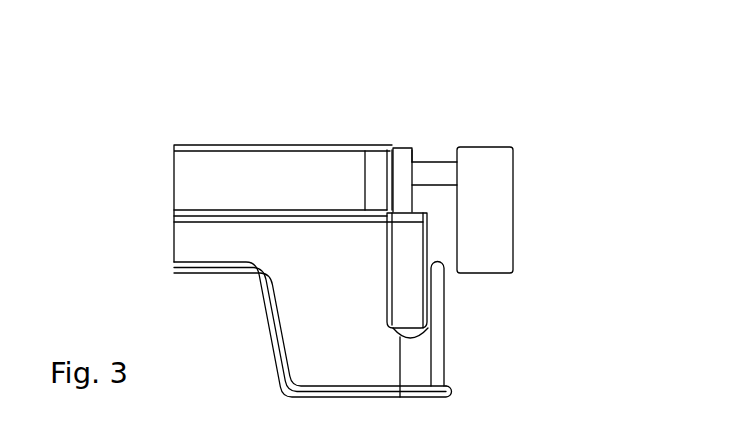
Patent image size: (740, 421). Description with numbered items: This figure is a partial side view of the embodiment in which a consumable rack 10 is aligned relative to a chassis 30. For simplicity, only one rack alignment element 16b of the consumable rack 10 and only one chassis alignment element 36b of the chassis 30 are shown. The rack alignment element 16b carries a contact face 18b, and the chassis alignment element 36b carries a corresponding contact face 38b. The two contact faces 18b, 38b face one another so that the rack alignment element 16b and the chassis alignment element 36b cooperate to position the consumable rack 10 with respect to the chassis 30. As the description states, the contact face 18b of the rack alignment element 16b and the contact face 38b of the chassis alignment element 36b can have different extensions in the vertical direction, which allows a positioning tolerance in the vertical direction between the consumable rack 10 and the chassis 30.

The consumable rack 10 is at (446, 343).
The rack alignment element 16b is at (398, 148).
The contact face 18b is at (397, 150).
The chassis 30 is at (513, 203).
The chassis alignment element 36b is at (444, 161).
The contact face 38b is at (414, 158).